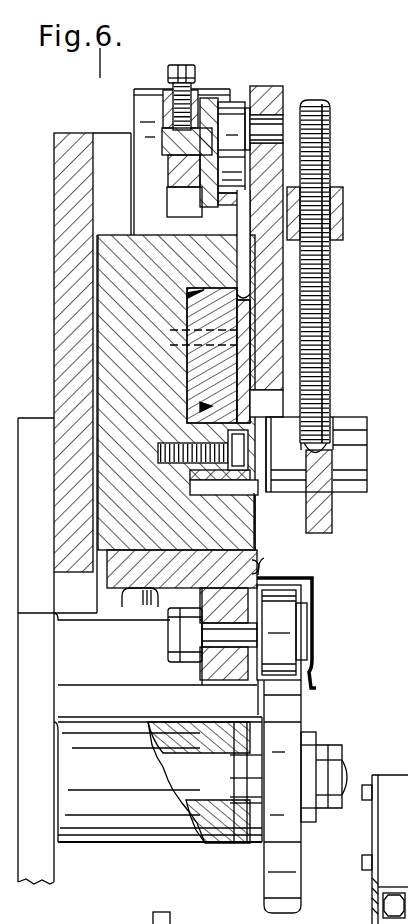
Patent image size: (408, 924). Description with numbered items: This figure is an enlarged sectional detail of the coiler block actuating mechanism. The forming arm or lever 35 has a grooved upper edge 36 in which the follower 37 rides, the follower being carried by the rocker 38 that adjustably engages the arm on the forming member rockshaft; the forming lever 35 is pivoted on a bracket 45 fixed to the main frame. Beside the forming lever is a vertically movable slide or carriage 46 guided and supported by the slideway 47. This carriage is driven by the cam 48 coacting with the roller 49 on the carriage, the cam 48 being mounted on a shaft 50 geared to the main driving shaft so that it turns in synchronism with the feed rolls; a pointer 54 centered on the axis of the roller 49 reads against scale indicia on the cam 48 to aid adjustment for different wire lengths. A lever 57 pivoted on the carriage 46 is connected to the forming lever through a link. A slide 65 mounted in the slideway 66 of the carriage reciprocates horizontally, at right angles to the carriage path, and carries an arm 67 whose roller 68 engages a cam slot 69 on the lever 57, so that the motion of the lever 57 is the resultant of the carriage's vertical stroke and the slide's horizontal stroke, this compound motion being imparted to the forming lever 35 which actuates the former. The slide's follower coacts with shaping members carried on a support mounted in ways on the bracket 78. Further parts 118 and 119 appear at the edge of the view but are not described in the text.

The forming arm or lever 35 is at (325, 518).
The grooved upper edge 36 is at (364, 444).
The follower 37 is at (332, 377).
The rocker 38 is at (338, 212).
The bracket 45 is at (279, 480).
The slide or carriage 46 is at (113, 245).
The slideway 47 is at (107, 148).
The cam 48 is at (290, 720).
The roller 49 is at (289, 623).
The shaft 50 is at (197, 738).
The pointer 54 is at (320, 658).
The lever 57 is at (198, 80).
The slide 65 is at (242, 345).
The slideway 66 is at (244, 303).
The arm 67 is at (274, 267).
The roller 68 is at (237, 108).
The cam slot 69 is at (237, 167).
The bracket 78 is at (60, 249).
The bracket 118 is at (170, 918).
The bolt 119 is at (396, 887).